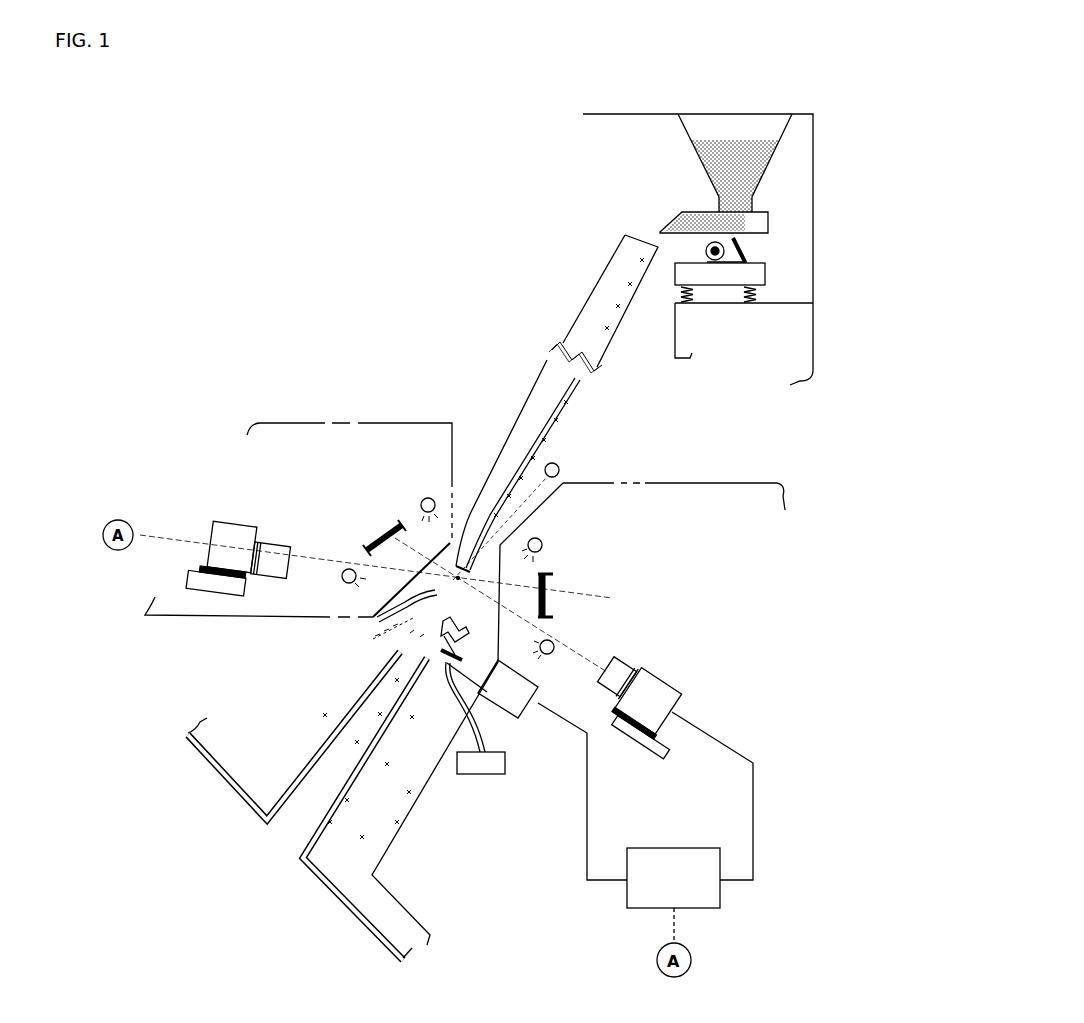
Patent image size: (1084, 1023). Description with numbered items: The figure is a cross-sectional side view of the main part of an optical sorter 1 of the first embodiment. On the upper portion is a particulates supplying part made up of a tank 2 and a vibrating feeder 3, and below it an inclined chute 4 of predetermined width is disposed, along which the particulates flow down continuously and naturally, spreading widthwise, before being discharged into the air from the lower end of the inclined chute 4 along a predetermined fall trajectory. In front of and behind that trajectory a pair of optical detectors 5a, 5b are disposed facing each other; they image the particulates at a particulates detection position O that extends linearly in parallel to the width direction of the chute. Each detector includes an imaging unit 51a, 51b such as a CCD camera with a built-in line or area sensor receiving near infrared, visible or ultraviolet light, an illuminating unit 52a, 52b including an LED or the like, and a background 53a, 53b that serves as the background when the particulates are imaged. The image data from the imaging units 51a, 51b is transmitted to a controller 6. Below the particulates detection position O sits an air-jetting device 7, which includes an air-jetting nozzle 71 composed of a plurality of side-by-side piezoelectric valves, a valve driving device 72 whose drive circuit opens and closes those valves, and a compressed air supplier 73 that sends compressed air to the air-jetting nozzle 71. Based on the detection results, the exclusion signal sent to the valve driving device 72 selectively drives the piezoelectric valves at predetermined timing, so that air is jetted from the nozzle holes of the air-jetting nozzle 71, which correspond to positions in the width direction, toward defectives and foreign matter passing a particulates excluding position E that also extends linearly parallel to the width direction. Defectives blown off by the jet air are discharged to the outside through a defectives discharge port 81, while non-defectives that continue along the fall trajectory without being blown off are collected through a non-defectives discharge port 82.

The optical sorter 1 is at (438, 275).
The tank 2 is at (690, 129).
The vibrating feeder 3 is at (681, 213).
The inclined chute 4 is at (606, 260).
The optical detector 5a is at (317, 433).
The optical detector 5b is at (706, 496).
The imaging unit 51a is at (222, 527).
The imaging unit 51b is at (667, 690).
The illuminating unit 52a is at (423, 498).
The illuminating unit 52b is at (544, 549).
The background 53a is at (389, 527).
The background 53b is at (554, 587).
The controller 6 is at (697, 893).
The air-jetting device 7 is at (441, 723).
The air-jetting nozzle 71 is at (462, 634).
The valve driving device 72 is at (517, 714).
The compressed air supplier 73 is at (497, 766).
The defectives discharge port 81 is at (352, 876).
The non-defectives discharge port 82 is at (288, 823).
The particulates excluding position E is at (449, 585).
The particulates detection position O is at (552, 470).